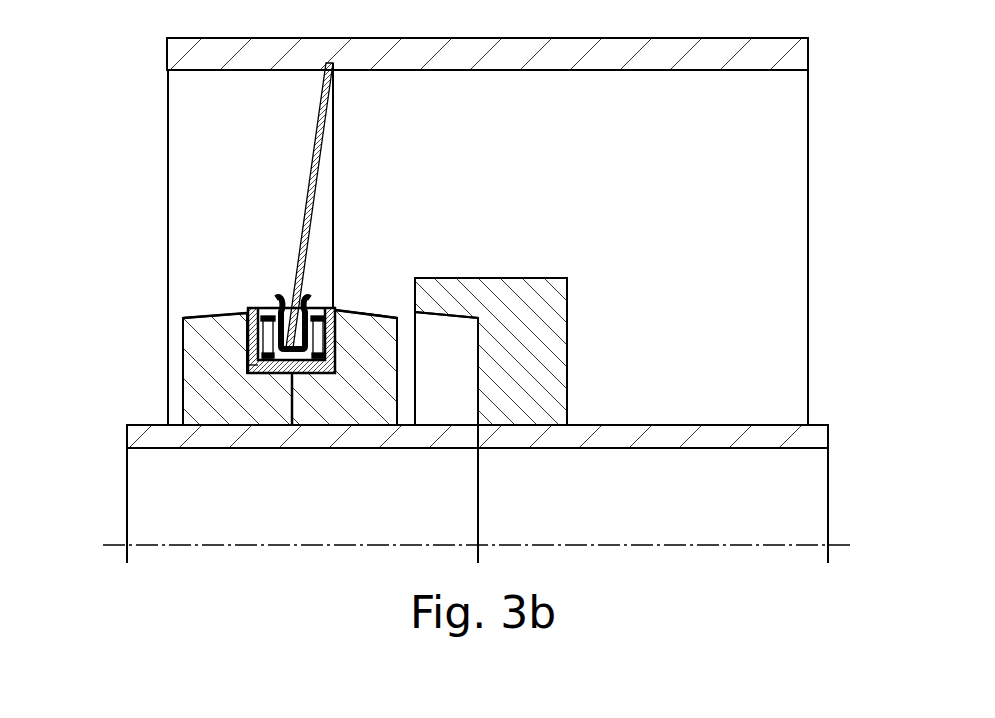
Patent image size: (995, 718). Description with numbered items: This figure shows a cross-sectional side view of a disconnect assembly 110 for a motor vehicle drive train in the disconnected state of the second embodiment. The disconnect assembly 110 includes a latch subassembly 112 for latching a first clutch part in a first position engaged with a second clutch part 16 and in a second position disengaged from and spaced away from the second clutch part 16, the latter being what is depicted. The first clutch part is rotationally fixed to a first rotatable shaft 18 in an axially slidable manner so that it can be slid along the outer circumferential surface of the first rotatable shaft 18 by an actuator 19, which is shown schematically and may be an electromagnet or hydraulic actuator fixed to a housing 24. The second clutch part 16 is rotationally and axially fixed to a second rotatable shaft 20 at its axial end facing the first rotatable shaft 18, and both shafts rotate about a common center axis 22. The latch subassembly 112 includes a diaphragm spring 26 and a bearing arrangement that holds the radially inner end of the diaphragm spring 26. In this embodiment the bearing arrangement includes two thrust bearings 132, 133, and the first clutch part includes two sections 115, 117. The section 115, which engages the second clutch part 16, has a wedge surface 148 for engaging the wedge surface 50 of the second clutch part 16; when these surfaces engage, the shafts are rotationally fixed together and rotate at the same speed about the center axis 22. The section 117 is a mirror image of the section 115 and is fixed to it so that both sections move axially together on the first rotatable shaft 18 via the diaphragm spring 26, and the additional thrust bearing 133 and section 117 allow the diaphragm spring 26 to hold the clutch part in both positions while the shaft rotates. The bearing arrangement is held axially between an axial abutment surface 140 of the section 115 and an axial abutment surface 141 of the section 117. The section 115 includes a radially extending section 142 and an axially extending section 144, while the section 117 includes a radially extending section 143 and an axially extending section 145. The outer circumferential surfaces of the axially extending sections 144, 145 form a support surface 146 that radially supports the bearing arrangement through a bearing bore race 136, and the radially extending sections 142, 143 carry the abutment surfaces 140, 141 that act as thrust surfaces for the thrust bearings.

The disconnect assembly 110 is at (92, 91).
The latch subassembly 112 is at (353, 147).
The housing 24 is at (575, 58).
The second rotatable shaft 20 is at (680, 435).
The center axis 22 is at (740, 545).
The second clutch part 16 is at (522, 303).
The wedge surface 50 is at (457, 313).
The diaphragm spring 26 is at (322, 135).
The axial abutment surface 140 is at (347, 310).
The radially extending section 142 is at (385, 315).
The axially extending section 144 is at (338, 385).
The wedge surface 148 is at (372, 313).
The section 115 is at (378, 410).
The support surface 146 is at (308, 373).
The axially extending section 145 is at (278, 410).
The bearing bore race 136 is at (270, 377).
The radially extending section 143 is at (205, 355).
The axial abutment surface 141 is at (247, 318).
The thrust bearing 133 is at (250, 267).
The thrust bearing 132 is at (308, 287).
The actuator 19 is at (237, 409).
The section 117 is at (197, 410).
The first rotatable shaft 18 is at (267, 438).